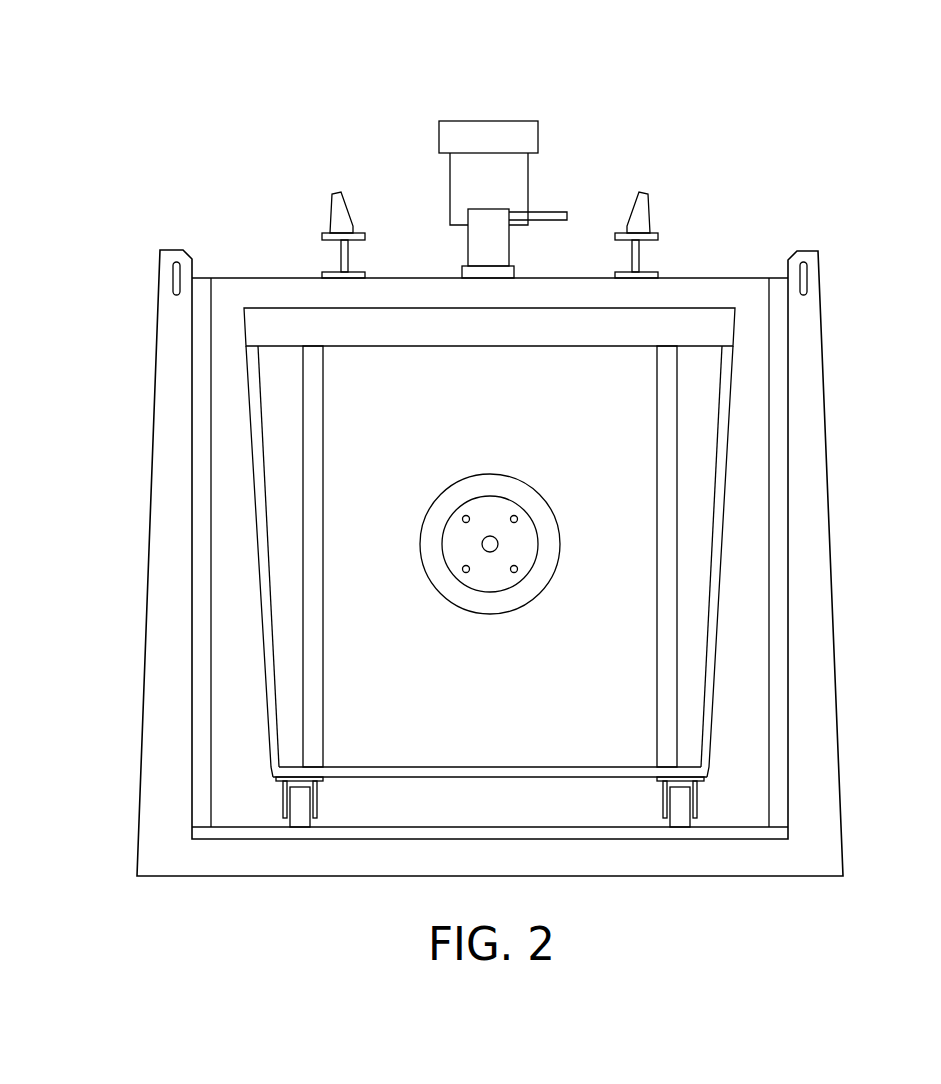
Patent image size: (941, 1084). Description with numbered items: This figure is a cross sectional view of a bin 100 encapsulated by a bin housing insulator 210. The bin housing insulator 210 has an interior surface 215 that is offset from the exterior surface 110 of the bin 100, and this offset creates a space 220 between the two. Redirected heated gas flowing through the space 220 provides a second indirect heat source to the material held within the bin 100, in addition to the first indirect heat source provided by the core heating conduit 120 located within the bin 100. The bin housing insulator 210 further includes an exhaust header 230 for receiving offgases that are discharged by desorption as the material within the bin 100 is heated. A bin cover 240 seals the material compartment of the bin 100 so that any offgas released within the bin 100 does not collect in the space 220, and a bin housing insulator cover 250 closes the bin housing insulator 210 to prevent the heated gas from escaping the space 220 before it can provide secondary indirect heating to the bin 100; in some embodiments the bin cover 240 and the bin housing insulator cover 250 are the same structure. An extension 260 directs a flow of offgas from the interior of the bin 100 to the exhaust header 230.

The bin 100 is at (690, 698).
The exterior surface 110 is at (712, 746).
The core heating conduit 120 is at (432, 563).
The bin housing insulator 210 is at (813, 437).
The interior surface 215 is at (770, 532).
The space 220 is at (748, 600).
The exhaust header 230 is at (496, 135).
The bin cover 240 is at (297, 328).
The bin housing insulator cover 250 is at (238, 290).
The extension 260 is at (493, 252).